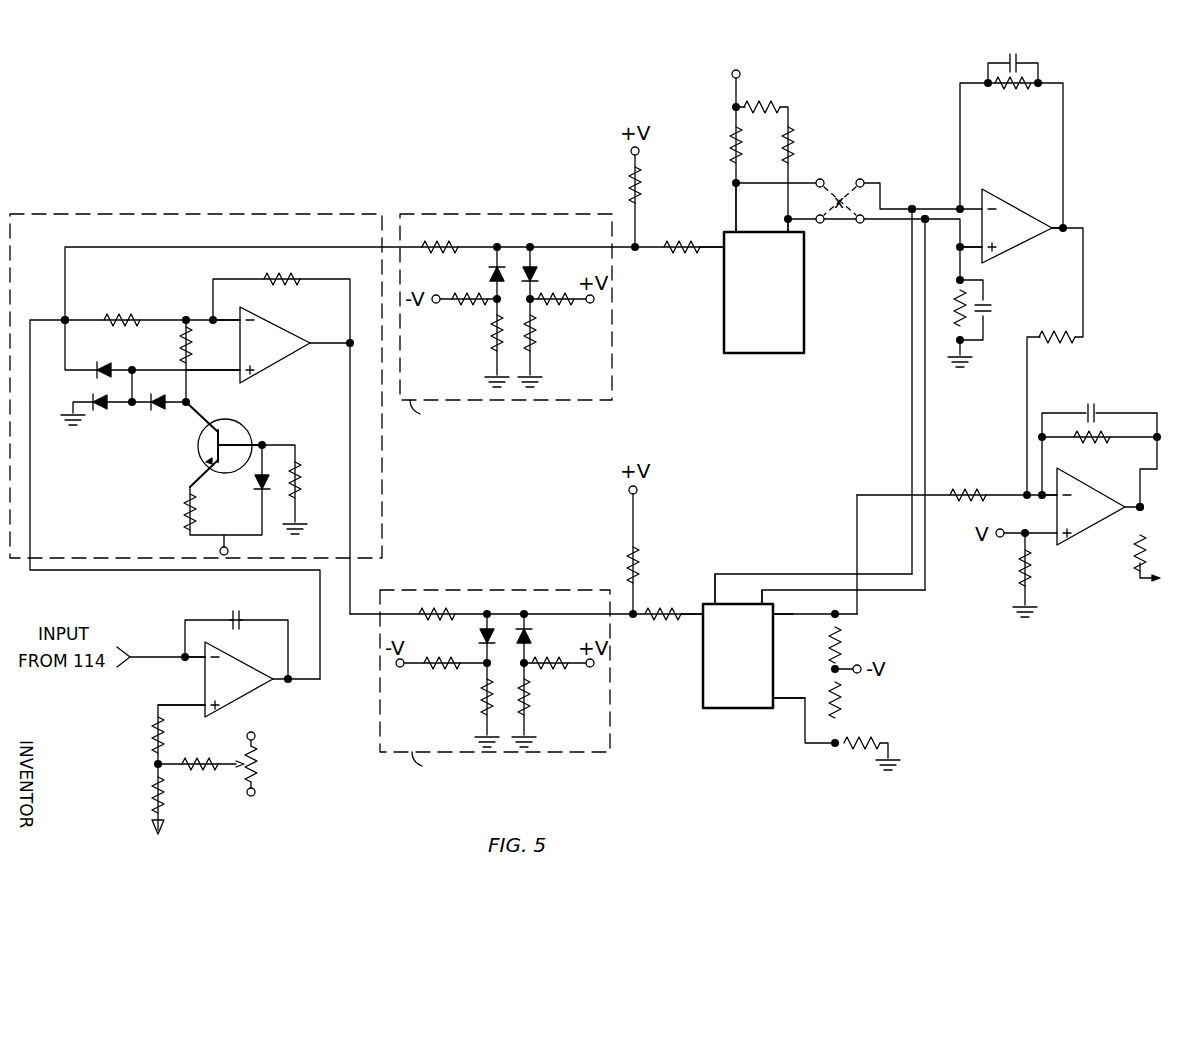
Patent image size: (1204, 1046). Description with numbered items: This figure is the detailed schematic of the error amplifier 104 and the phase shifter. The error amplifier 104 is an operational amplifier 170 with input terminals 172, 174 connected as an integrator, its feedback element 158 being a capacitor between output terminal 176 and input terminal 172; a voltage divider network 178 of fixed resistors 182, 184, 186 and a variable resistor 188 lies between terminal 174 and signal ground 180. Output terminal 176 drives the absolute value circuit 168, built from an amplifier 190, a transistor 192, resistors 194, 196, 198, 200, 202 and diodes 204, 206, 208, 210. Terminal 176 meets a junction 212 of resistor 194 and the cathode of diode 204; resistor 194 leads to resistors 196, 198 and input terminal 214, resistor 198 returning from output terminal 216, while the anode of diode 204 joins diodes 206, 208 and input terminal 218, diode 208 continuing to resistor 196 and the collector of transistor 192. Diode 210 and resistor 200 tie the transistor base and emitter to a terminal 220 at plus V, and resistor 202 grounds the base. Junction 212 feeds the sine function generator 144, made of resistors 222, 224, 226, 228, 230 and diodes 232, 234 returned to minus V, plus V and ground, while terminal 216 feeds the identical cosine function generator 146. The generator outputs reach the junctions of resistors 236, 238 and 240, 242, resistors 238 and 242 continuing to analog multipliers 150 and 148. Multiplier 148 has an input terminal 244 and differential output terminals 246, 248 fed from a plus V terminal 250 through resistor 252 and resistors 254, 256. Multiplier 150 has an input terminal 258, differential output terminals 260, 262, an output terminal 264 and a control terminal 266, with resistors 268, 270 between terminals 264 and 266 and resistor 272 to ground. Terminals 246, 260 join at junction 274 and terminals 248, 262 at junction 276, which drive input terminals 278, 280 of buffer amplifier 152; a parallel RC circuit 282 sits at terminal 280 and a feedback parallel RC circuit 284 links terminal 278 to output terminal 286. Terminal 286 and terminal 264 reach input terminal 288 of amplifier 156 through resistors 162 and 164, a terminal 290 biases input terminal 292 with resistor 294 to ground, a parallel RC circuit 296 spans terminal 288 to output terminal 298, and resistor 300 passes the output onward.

The error amplifier 104 is at (329, 729).
The sine function generator 144 is at (446, 214).
The cosine function generator 146 is at (490, 590).
The analog multiplier 148 is at (762, 353).
The analog multiplier 150 is at (728, 708).
The buffer amplifier 152 is at (1012, 203).
The amplifier 156 is at (1081, 537).
The feedback element 158 is at (238, 613).
The impedance 162 is at (1063, 337).
The impedance 164 is at (961, 489).
The absolute value circuit 168 is at (215, 214).
The operational amplifier 170 is at (260, 693).
The input terminal 172 is at (199, 660).
The input terminal 174 is at (202, 702).
The output terminal 176 is at (292, 681).
The voltage divider network 178 is at (140, 776).
The signal ground 180 is at (156, 838).
The fixed resistor 182 is at (154, 736).
The fixed resistor 184 is at (185, 758).
The fixed resistor 186 is at (150, 798).
The variable resistor 188 is at (259, 776).
The amplifier 190 is at (280, 371).
The transistor 192 is at (250, 434).
The resistor 194 is at (127, 317).
The resistor 196 is at (209, 345).
The resistor 198 is at (285, 279).
The resistor 200 is at (184, 510).
The resistor 202 is at (299, 496).
The diode 204 is at (97, 368).
The diode 206 is at (93, 402).
The diode 208 is at (160, 410).
The diode 210 is at (256, 488).
The junction 212 is at (67, 318).
The input terminal 214 is at (225, 318).
The output terminal 216 is at (332, 341).
The input terminal 218 is at (233, 388).
The terminal 220 is at (220, 552).
The resistor 222 is at (440, 247).
The resistor 224 is at (480, 309).
The resistor 226 is at (552, 309).
The resistor 228 is at (488, 358).
The resistor 230 is at (536, 354).
The diode 232 is at (488, 278).
The diode 234 is at (537, 272).
The resistor 236 is at (639, 555).
The resistor 238 is at (669, 621).
The resistor 240 is at (644, 186).
The resistor 242 is at (660, 236).
The input terminal 244 is at (720, 256).
The differential output terminal 246 is at (740, 229).
The differential output terminal 248 is at (786, 232).
The terminal 250 is at (740, 70).
The resistor 252 is at (740, 129).
The resistor 254 is at (766, 102).
The resistor 256 is at (794, 138).
The input terminal 258 is at (675, 648).
The differential output terminal 260 is at (707, 595).
The differential output terminal 262 is at (772, 596).
The output terminal 264 is at (778, 622).
The control terminal 266 is at (778, 700).
The resistor 268 is at (844, 641).
The resistor 270 is at (844, 703).
The resistor 272 is at (866, 741).
The junction 274 is at (912, 208).
The junction 276 is at (938, 222).
The input terminal 278 is at (963, 204).
The input terminal 280 is at (986, 256).
The parallel RC circuit 282 is at (1012, 306).
The parallel RC circuit 284 is at (1051, 57).
The output terminal 286 is at (1056, 230).
The input terminal 288 is at (1049, 503).
The terminal 290 is at (1005, 540).
The input terminal 292 is at (1034, 549).
The resistor 294 is at (1015, 585).
The parallel RC circuit 296 is at (1142, 408).
The output terminal 298 is at (1144, 506).
The resistor 300 is at (1180, 550).